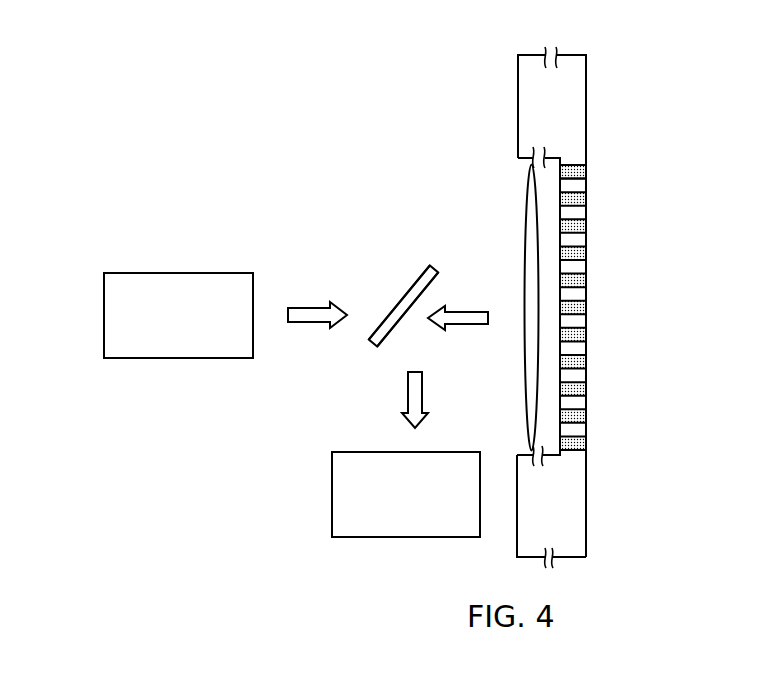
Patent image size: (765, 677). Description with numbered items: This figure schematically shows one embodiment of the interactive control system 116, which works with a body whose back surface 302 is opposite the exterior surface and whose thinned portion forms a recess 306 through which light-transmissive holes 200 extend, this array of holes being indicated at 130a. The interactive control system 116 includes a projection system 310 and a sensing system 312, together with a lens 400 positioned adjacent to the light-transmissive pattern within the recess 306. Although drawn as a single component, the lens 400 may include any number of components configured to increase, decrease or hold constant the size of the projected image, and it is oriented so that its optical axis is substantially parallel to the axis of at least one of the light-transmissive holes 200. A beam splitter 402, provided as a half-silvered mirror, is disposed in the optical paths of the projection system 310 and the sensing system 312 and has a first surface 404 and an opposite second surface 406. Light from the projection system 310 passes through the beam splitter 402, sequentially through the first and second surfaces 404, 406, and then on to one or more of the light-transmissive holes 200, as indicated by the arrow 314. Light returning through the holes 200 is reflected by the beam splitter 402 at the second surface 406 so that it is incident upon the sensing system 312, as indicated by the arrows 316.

The interactive control system 116 is at (293, 151).
The sensor array 130a is at (600, 168).
The light-transmissive holes 200 is at (584, 169).
The back surface 302 is at (518, 75).
The recess 306 is at (512, 160).
The projection system 310 is at (118, 358).
The sensing system 312 is at (343, 537).
The arrow 314 is at (330, 325).
The arrows 316 is at (470, 326).
The lens 400 is at (525, 237).
The beam splitter 402 is at (374, 354).
The first surface 404 is at (428, 266).
The second surface 406 is at (437, 282).